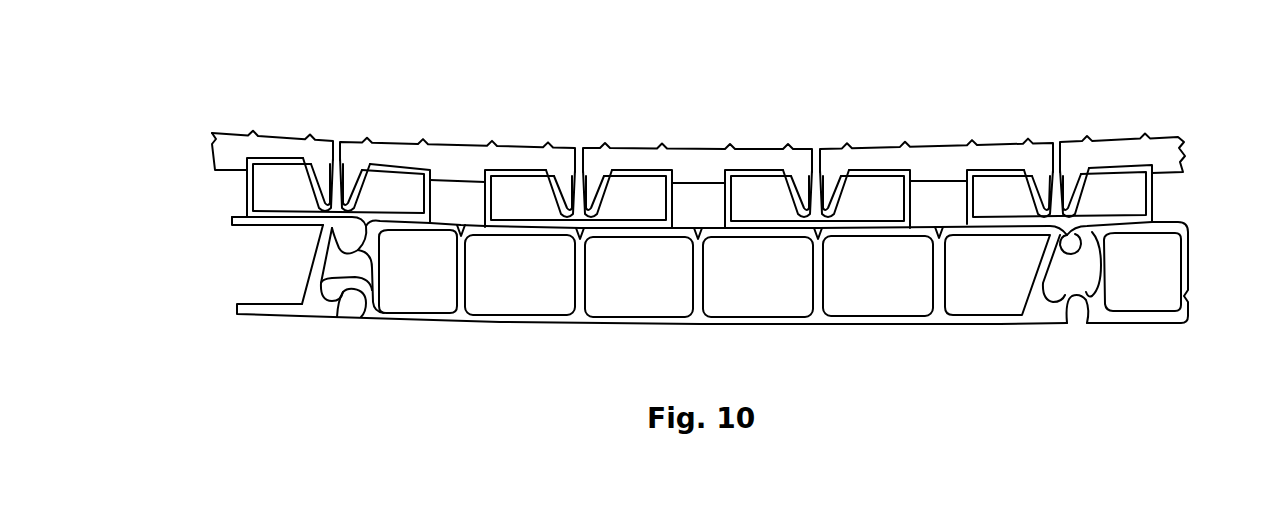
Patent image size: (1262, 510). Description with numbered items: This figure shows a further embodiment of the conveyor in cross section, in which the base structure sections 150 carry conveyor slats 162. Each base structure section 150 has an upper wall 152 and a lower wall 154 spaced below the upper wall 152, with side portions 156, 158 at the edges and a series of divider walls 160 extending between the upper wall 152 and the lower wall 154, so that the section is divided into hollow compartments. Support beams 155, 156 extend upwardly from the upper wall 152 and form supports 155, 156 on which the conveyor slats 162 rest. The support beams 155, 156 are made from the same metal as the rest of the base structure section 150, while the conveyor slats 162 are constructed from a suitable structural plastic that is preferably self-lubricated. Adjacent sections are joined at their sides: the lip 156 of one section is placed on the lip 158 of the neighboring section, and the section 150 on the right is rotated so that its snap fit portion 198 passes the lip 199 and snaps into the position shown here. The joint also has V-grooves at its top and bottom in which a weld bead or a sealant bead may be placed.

The base structure section 150 is at (725, 225).
The upper wall 152 is at (618, 232).
The lower wall 154 is at (867, 322).
The support beam 155 is at (433, 200).
The support beam 156 is at (255, 187).
The side portion 158 is at (344, 311).
The divider wall 160 is at (574, 263).
The conveyor slat 162 is at (242, 139).
The snap fit portion 198 is at (1068, 244).
The lip 199 is at (1098, 233).